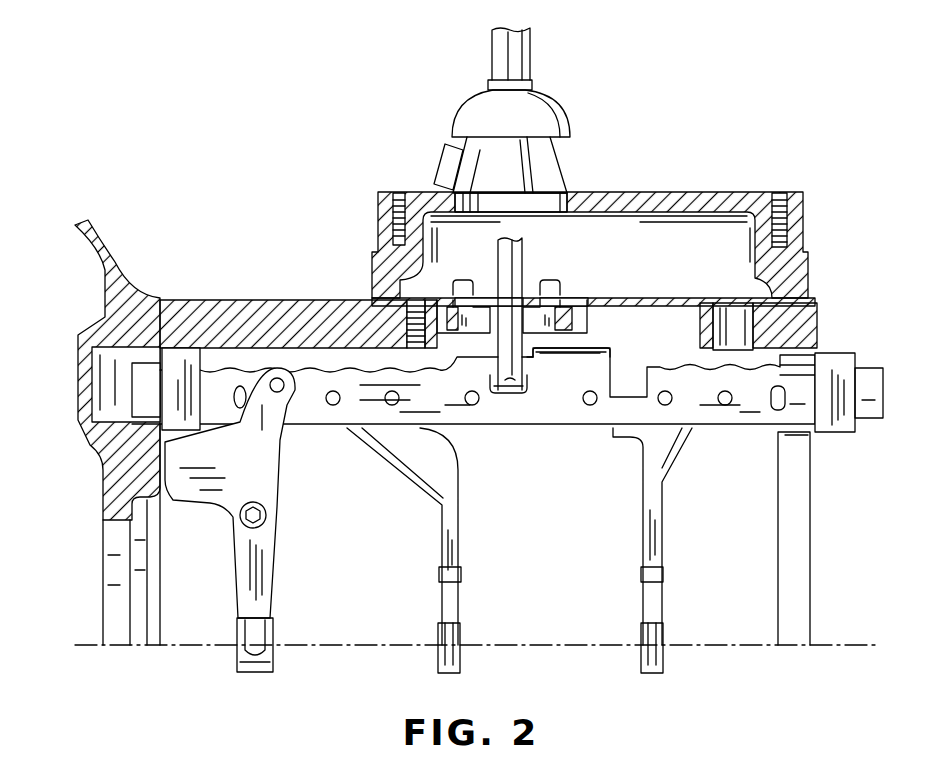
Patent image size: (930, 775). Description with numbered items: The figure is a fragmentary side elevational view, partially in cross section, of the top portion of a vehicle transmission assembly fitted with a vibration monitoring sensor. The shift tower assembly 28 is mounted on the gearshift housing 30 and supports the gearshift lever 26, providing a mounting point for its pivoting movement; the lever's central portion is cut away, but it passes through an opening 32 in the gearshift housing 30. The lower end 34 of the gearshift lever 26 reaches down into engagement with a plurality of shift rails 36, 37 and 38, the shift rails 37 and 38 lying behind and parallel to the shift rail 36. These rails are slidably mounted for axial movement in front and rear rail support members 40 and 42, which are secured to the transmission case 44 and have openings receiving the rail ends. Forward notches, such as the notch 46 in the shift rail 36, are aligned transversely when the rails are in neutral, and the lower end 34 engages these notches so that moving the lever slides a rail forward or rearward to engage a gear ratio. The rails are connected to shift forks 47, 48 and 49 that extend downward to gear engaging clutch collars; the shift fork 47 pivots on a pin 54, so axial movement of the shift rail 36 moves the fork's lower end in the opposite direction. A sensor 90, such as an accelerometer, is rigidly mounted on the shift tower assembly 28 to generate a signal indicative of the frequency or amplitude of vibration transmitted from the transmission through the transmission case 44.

The gearshift lever 26 is at (527, 45).
The shift tower assembly 28 is at (563, 162).
The gearshift housing 30 is at (670, 192).
The opening 32 is at (550, 205).
The lower end 34 is at (521, 396).
The shift rail 36 is at (329, 418).
The shift rail 37 is at (607, 357).
The shift rail 38 is at (590, 348).
The front rail support member 40 is at (183, 363).
The rear rail support member 42 is at (833, 432).
The transmission case 44 is at (325, 300).
The notch 46 is at (513, 400).
The shift fork 47 is at (275, 570).
The shift fork 48 is at (458, 552).
The shift fork 49 is at (662, 552).
The pin 54 is at (267, 517).
The sensor 90 is at (442, 163).